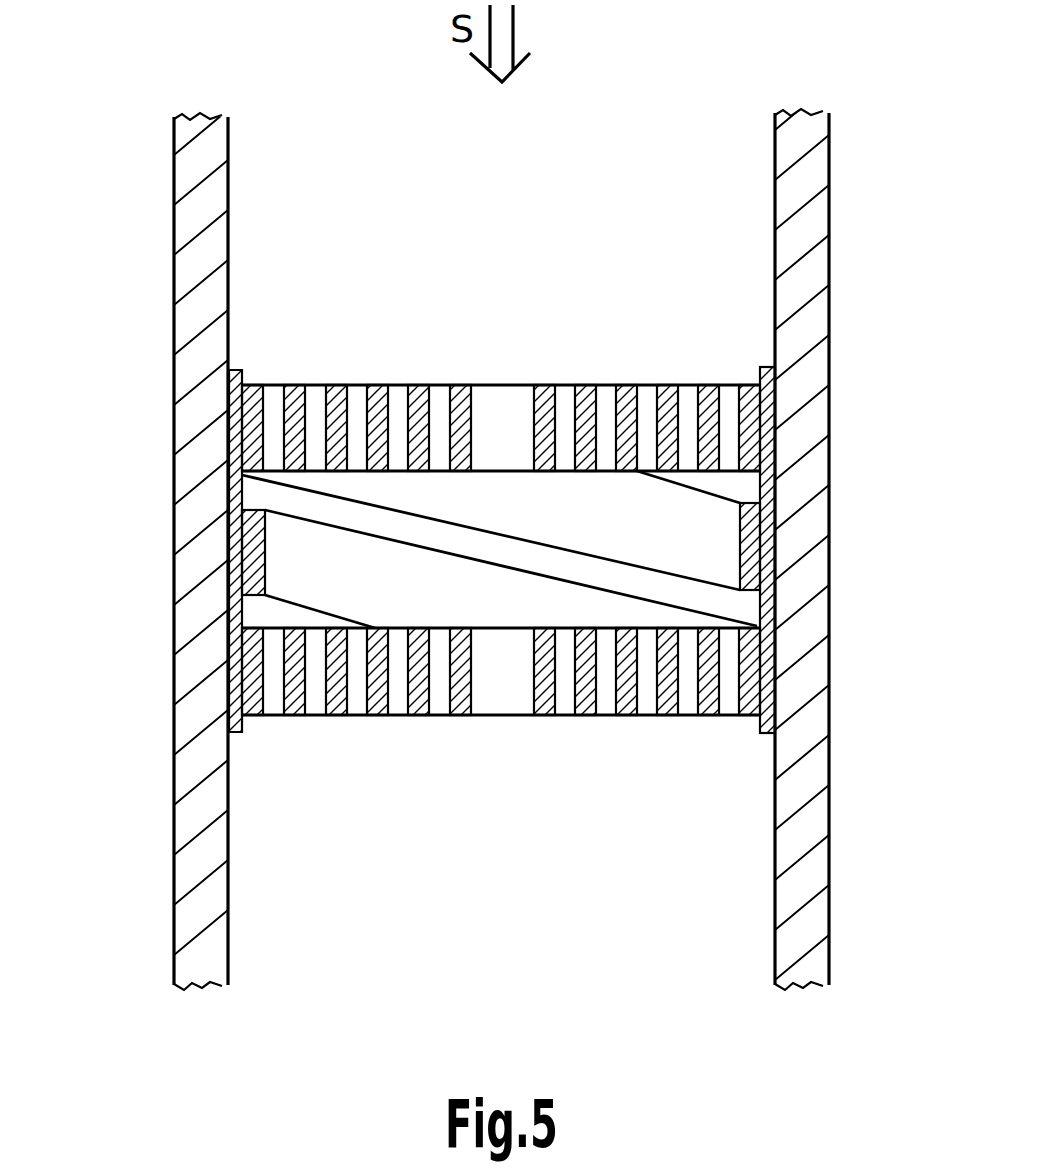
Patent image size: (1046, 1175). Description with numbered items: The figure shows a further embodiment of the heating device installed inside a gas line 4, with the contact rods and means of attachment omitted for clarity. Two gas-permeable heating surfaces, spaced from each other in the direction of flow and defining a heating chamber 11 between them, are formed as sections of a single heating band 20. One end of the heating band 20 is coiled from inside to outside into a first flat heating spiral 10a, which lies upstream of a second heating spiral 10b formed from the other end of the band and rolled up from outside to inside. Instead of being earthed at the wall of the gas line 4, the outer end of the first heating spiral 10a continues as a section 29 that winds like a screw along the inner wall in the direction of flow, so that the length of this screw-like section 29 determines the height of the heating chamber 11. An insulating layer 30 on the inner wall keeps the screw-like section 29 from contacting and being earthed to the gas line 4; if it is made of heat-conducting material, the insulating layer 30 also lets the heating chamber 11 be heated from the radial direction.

The gas line 4 is at (822, 206).
The heating band 20 is at (632, 362).
The first heating spiral 10a is at (228, 412).
The second heating spiral 10b is at (228, 665).
The screw-like heating band section 29 is at (228, 540).
The insulating layer 30 is at (768, 393).
The heating chamber 11 is at (623, 563).